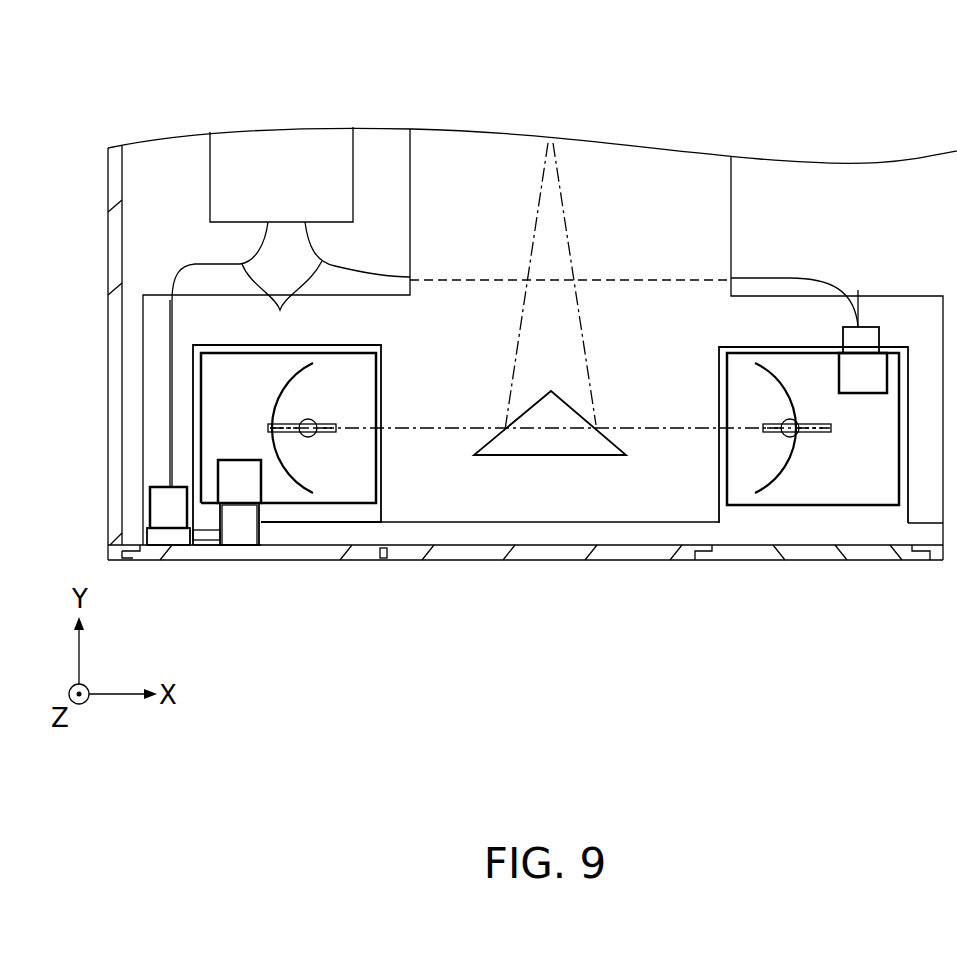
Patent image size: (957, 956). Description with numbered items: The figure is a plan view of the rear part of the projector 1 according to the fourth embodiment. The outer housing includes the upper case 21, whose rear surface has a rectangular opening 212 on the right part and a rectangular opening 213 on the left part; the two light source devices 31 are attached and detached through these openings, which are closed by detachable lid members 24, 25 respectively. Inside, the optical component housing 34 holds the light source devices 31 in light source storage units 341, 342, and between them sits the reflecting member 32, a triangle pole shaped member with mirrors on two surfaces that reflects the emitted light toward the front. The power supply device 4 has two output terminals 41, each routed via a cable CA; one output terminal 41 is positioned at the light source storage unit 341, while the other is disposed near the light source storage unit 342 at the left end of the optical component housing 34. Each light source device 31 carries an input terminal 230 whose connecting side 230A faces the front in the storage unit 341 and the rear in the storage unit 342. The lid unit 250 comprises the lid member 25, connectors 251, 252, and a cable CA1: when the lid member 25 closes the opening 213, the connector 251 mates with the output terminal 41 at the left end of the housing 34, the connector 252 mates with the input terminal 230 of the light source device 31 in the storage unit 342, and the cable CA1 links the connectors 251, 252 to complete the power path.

The projector 1 is at (887, 124).
The power supply device 4 is at (285, 140).
The upper case 21 is at (108, 252).
The lid member 24 is at (805, 560).
The lid member 25 is at (263, 550).
The light source device 31 is at (382, 472).
The reflecting member 32 is at (551, 445).
The optical component housing 34 is at (731, 217).
The output terminal 41 is at (150, 493).
The opening 212 is at (697, 562).
The opening 213 is at (140, 562).
The input terminal 230 is at (248, 480).
The connecting side 230A is at (858, 350).
The lid unit 250 is at (340, 620).
The connector 251 is at (167, 535).
The connector 252 is at (238, 532).
The light source storage unit 341 is at (727, 392).
The light source storage unit 342 is at (382, 383).
The cable CA is at (282, 303).
The cable CA1 is at (210, 537).